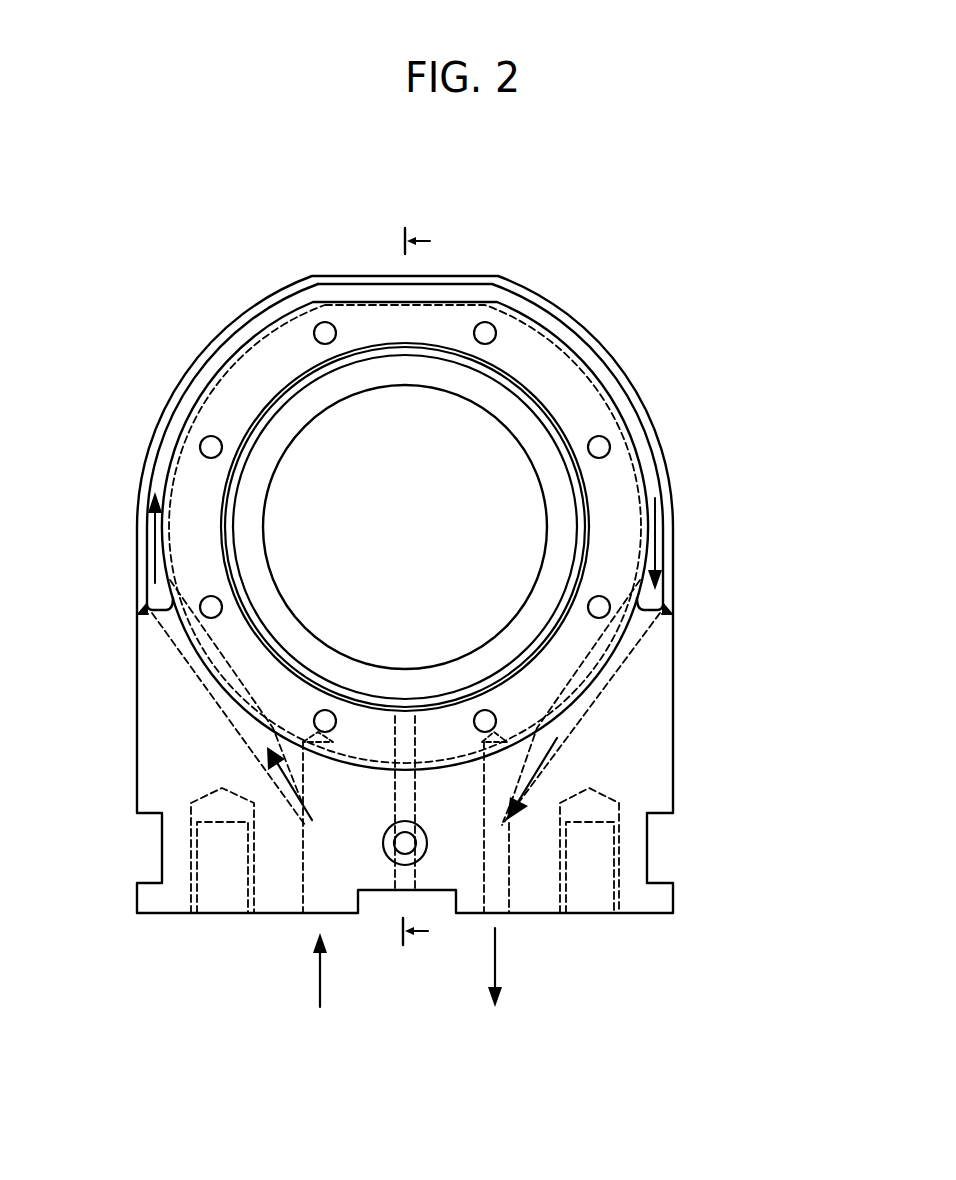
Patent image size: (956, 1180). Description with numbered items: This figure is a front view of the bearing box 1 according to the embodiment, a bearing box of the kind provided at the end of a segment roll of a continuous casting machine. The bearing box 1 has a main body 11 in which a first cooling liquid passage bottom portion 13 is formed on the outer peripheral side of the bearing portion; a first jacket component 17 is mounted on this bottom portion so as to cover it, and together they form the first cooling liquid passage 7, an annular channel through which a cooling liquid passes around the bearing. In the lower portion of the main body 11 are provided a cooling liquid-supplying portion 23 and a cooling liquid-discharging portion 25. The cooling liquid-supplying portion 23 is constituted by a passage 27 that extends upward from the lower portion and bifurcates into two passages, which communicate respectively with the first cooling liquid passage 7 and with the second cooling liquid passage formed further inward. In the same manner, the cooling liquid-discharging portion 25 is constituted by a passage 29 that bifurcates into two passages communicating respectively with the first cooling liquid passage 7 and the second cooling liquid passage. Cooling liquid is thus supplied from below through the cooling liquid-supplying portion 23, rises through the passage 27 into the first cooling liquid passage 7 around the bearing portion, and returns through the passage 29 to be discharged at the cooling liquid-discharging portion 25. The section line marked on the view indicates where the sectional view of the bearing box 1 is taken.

The bearing box 1 is at (746, 288).
The first cooling liquid passage 7 is at (547, 318).
The main body 11 is at (673, 768).
The first cooling liquid passage bottom portion 13 is at (592, 372).
The first jacket component 17 is at (227, 330).
The cooling liquid-supplying portion 23 is at (318, 915).
The cooling liquid-discharging portion 25 is at (502, 915).
The passage 27 is at (197, 672).
The passage 29 is at (615, 672).